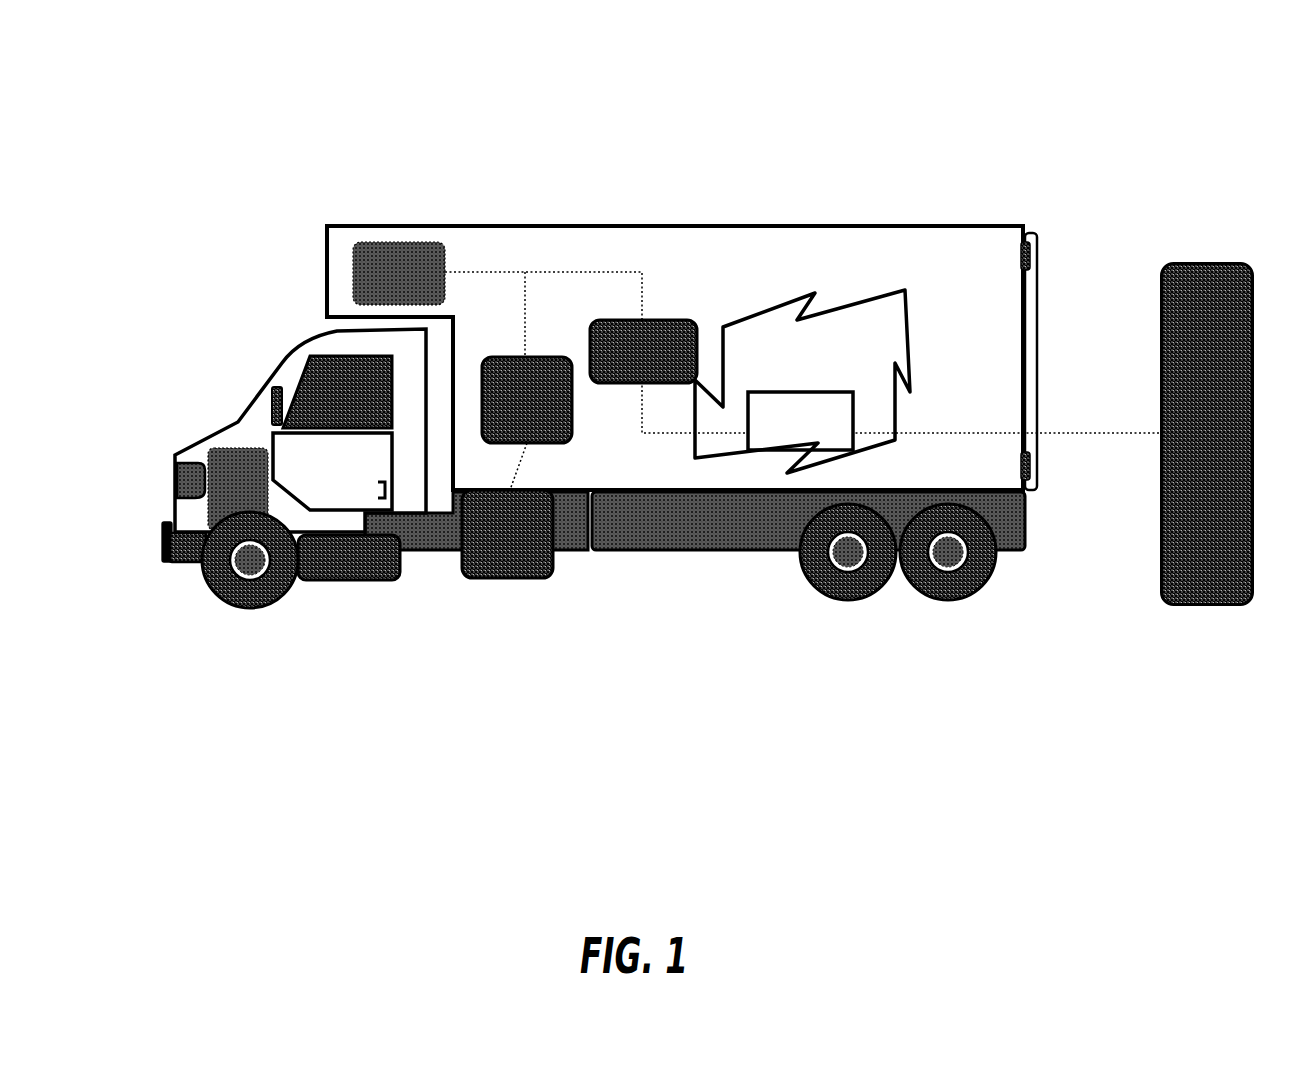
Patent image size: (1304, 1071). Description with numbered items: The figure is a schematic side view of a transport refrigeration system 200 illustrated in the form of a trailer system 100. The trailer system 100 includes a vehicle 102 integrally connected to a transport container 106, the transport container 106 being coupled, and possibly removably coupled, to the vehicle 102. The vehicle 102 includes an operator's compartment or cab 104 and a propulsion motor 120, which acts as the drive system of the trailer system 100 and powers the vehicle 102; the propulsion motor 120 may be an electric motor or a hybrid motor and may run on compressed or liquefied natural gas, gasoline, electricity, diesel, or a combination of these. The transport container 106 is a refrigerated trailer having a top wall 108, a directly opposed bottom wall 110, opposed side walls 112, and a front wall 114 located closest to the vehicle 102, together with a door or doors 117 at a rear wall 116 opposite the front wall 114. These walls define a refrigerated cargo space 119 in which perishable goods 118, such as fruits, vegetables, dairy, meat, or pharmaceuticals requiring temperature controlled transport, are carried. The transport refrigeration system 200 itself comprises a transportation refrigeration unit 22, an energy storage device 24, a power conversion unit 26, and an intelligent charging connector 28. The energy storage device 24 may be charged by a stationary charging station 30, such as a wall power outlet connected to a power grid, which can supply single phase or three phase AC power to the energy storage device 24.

The trailer system 100 is at (250, 153).
The transport refrigeration system 200 is at (448, 194).
The transportation refrigeration unit 22 is at (377, 242).
The energy storage device 24 is at (555, 567).
The power conversion unit 26 is at (572, 420).
The intelligent charging connector 28 is at (602, 318).
The charging station 30 is at (1215, 606).
The vehicle 102 is at (185, 562).
The cab 104 is at (312, 400).
The transport container 106 is at (778, 238).
The top wall 108 is at (632, 224).
The bottom wall 110 is at (863, 489).
The side walls 112 is at (693, 278).
The front wall 114 is at (453, 430).
The rear wall 116 is at (1022, 304).
The door 117 is at (1022, 368).
The perishable goods 118 is at (800, 436).
The refrigerated cargo space 119 is at (872, 345).
The propulsion motor 120 is at (222, 447).